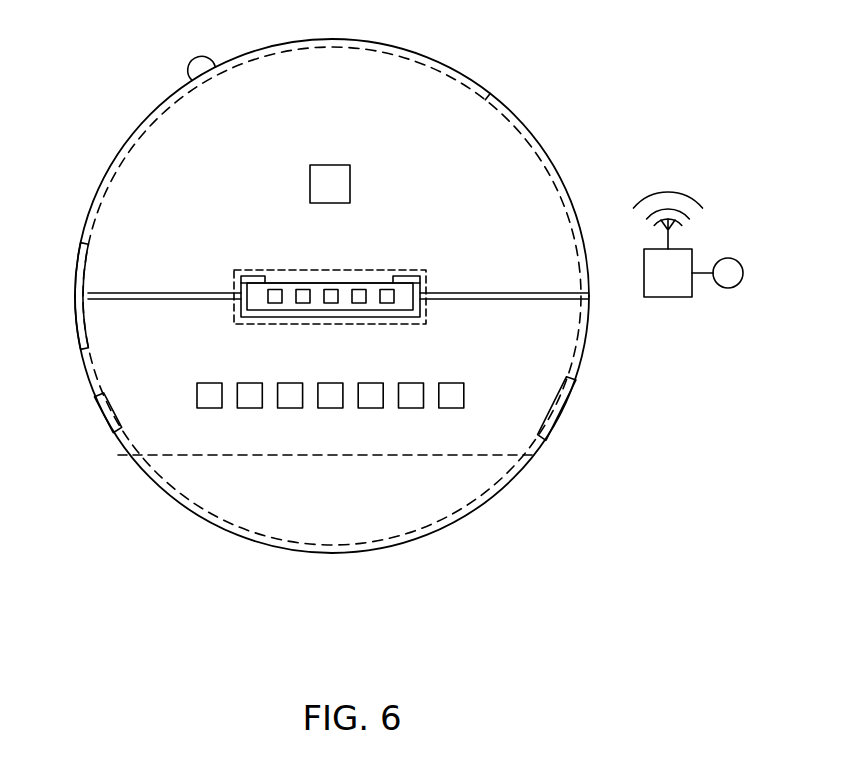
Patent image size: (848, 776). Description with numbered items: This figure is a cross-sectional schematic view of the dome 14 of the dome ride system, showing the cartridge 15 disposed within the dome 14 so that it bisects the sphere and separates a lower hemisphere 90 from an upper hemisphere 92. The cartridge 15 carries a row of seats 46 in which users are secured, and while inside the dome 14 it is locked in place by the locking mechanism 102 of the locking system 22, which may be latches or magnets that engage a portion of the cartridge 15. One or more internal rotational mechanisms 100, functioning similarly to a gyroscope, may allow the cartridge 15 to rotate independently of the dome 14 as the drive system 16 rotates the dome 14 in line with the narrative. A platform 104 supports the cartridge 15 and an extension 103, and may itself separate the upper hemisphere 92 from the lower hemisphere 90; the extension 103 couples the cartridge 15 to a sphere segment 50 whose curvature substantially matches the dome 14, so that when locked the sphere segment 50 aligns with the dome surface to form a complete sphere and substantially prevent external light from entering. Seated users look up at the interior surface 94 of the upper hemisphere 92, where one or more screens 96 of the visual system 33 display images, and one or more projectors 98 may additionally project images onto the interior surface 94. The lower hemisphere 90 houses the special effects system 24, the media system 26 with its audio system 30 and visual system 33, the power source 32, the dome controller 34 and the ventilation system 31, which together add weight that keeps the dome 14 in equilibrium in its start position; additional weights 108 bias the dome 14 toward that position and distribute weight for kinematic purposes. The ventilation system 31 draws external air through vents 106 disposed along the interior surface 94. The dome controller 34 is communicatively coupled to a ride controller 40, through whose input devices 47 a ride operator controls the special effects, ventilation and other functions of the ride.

The dome 14 is at (439, 61).
The cartridge 15 is at (334, 290).
The drive system 16 is at (447, 532).
The locking system 22 is at (399, 248).
The special effects system 24 is at (207, 408).
The media system 26 is at (171, 390).
The audio system 30 is at (250, 383).
The ventilation system 31 is at (449, 408).
The power source 32 is at (289, 408).
The visual system 33 is at (329, 383).
The dome controller 34 is at (368, 408).
The ride controller 40 is at (658, 288).
The seats 46 is at (276, 290).
The input devices 47 is at (741, 265).
The sphere segment 50 is at (76, 260).
The lower hemisphere 90 is at (190, 559).
The upper hemisphere 92 is at (110, 97).
The interior surface 94 is at (196, 82).
The screens 96 is at (493, 91).
The projectors 98 is at (320, 195).
The internal rotational mechanisms 100 is at (423, 320).
The locking mechanism 102 is at (252, 276).
The extension 103 is at (127, 294).
The platform 104 is at (148, 301).
The vents 106 is at (563, 410).
The weights 108 is at (410, 383).